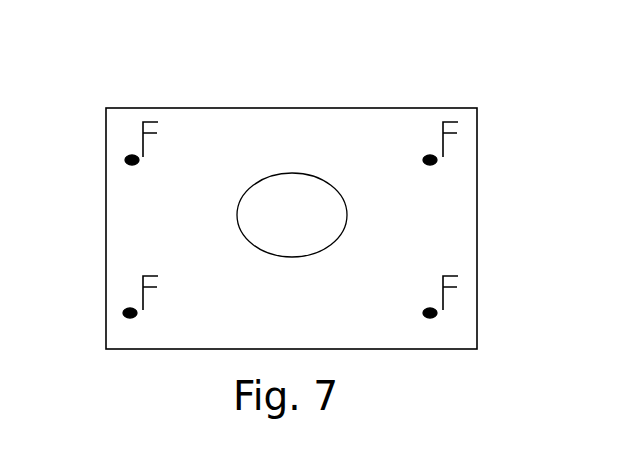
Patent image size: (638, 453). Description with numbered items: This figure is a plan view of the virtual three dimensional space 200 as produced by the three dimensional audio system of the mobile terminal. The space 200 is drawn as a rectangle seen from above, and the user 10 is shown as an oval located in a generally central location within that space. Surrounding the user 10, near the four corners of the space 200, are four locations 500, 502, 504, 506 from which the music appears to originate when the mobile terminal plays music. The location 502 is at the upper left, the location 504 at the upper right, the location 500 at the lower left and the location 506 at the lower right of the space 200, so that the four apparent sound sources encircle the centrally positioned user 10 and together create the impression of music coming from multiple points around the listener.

The three dimensional space 200 is at (311, 97).
The user 10 is at (320, 175).
The location 500 is at (131, 319).
The location 502 is at (131, 165).
The location 504 is at (435, 164).
The location 506 is at (436, 313).